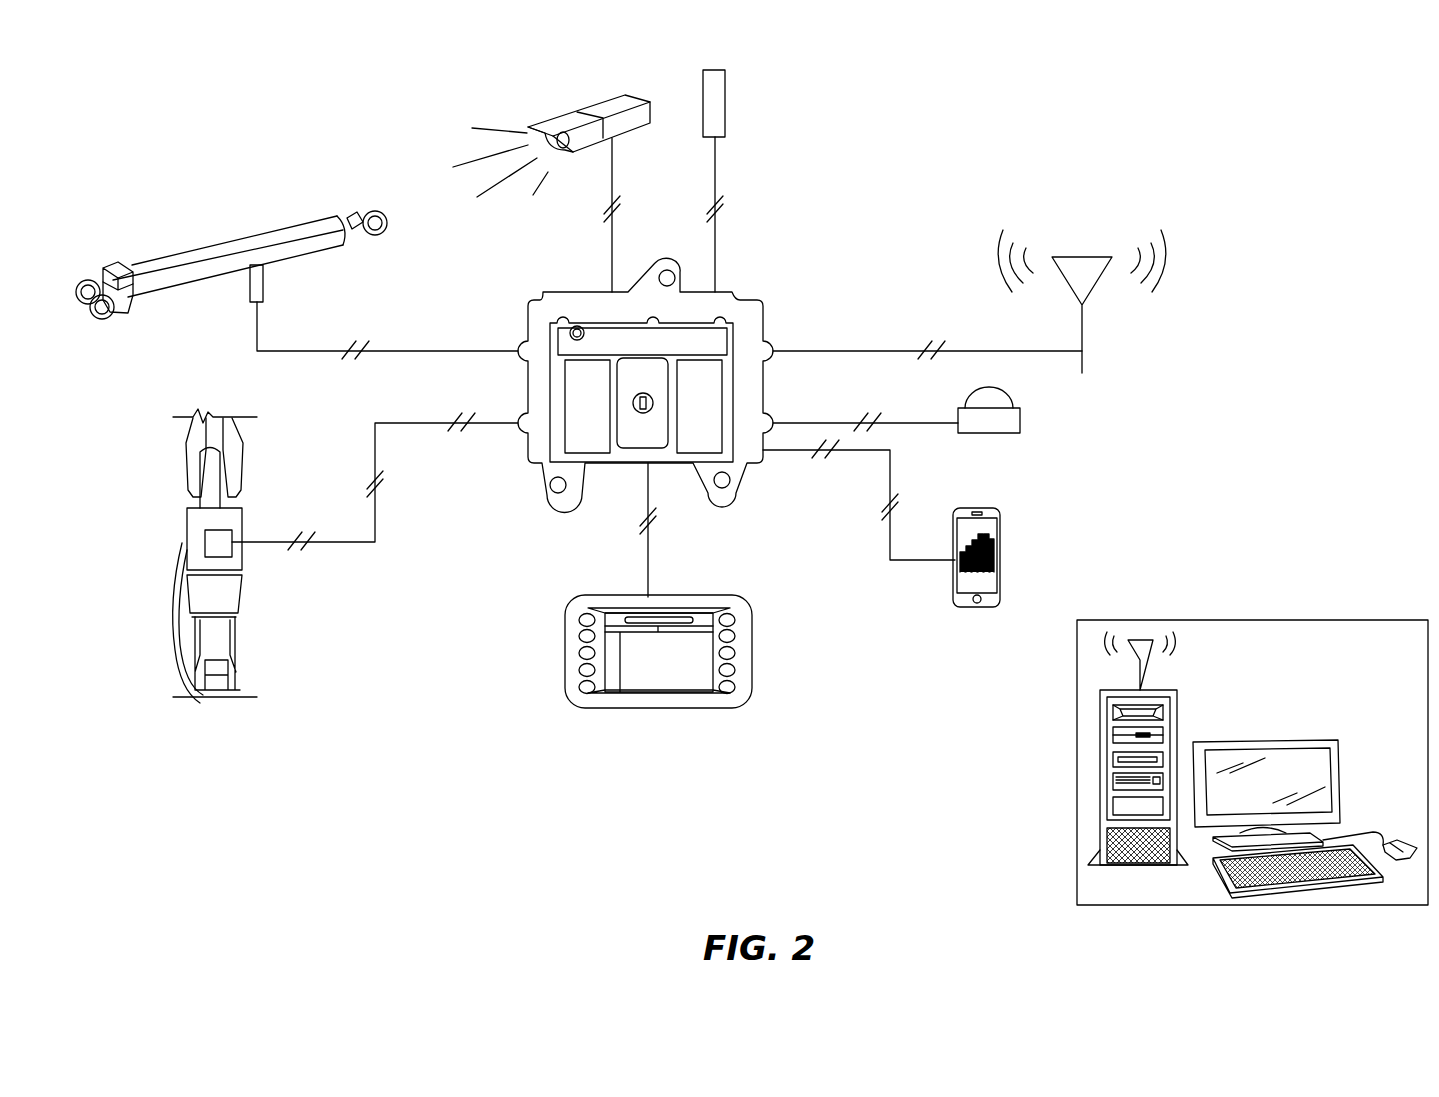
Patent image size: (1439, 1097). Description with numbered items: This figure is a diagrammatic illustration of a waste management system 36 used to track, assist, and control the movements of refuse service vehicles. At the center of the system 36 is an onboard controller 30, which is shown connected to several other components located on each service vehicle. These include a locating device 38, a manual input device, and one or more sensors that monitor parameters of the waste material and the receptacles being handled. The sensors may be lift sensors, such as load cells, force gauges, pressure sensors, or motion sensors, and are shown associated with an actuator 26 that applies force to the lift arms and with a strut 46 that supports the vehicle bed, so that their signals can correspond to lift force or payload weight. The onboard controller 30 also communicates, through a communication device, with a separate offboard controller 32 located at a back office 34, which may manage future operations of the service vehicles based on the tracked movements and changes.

The actuator 26 is at (175, 258).
The onboard controller 30 is at (765, 307).
The offboard controller 32 is at (1177, 725).
The back office 34 is at (1077, 840).
The waste management system 36 is at (1034, 104).
The locating device 38 is at (1020, 420).
The strut 46 is at (243, 582).